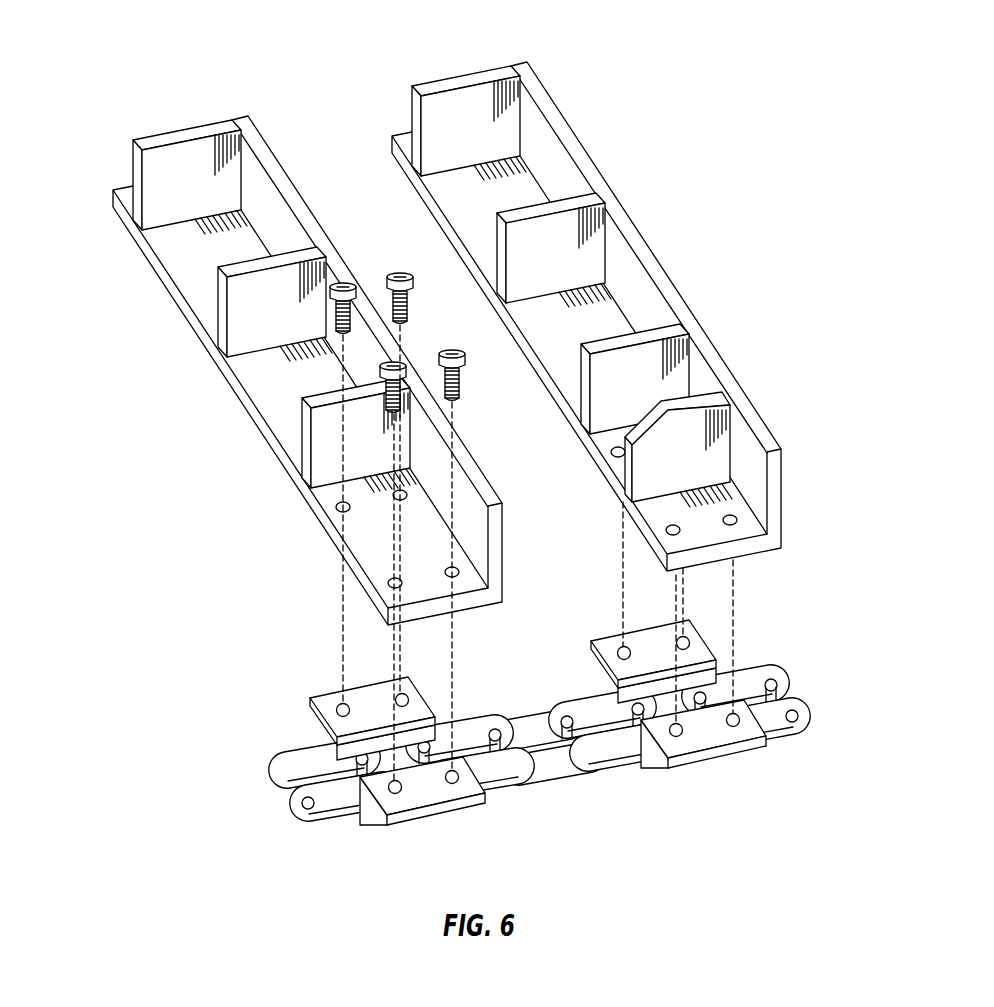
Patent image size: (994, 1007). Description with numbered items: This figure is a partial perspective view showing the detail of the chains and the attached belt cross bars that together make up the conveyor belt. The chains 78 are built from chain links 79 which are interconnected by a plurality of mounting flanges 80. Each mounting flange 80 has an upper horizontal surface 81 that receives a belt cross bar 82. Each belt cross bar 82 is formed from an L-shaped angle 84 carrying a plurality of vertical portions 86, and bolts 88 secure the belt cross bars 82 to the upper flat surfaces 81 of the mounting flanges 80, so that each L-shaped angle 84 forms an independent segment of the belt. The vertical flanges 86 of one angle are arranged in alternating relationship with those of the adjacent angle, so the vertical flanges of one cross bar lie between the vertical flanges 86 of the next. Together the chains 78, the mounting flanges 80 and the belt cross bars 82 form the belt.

The chain 78 is at (501, 724).
The chain link 79 is at (314, 750).
The mounting flange 80 is at (368, 678).
The upper horizontal surface 81 is at (330, 698).
The belt cross bar 82 is at (414, 321).
The L-shaped angle 84 is at (238, 390).
The vertical portion 86 is at (122, 189).
The bolt 88 is at (399, 273).